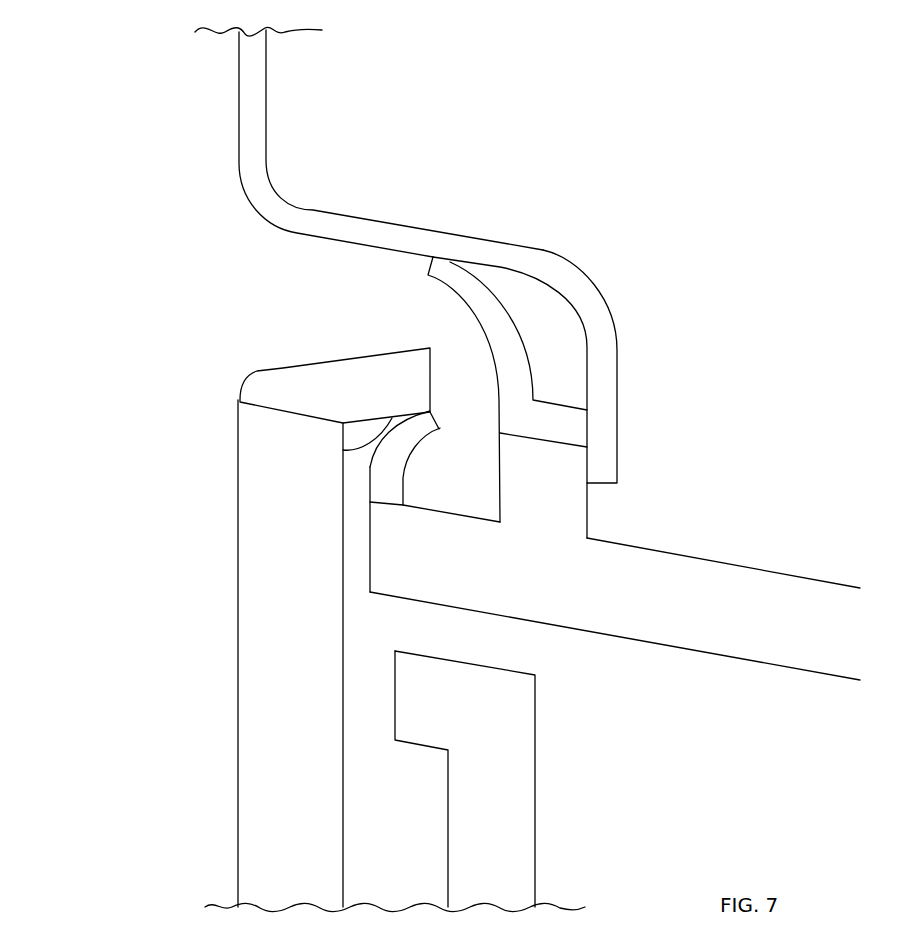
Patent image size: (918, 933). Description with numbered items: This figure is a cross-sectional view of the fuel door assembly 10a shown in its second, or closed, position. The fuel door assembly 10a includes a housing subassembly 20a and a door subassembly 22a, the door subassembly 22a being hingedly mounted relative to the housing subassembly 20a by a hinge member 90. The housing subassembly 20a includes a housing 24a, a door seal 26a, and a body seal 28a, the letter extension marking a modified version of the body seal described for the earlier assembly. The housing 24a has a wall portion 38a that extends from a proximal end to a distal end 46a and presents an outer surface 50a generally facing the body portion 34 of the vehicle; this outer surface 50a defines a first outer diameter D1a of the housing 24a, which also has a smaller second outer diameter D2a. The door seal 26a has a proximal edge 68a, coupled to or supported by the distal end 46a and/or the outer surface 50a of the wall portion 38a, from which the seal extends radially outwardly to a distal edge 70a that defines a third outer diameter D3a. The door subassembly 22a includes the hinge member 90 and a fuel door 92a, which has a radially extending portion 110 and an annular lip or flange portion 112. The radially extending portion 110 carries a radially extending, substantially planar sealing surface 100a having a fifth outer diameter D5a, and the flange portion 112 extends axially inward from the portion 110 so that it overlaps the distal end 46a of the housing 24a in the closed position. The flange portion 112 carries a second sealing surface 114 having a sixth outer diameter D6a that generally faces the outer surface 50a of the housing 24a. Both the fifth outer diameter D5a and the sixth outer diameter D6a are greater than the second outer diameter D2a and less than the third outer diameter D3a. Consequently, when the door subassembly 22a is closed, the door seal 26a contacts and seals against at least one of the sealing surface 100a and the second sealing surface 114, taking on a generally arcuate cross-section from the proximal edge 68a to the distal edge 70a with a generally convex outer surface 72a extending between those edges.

The fuel door assembly 10a is at (135, 165).
The body portion 34 is at (350, 223).
The roof side flange 28a is at (525, 369).
The convex outer surface 72a is at (390, 417).
The third outer diameter D3a is at (435, 420).
The distal edge 70a is at (439, 428).
The second outer diameter D2a is at (570, 445).
The flange portion 112 is at (353, 378).
The second sealing surface 114 is at (372, 422).
The fifth outer diameter D5a is at (343, 423).
The sixth outer diameter D6a is at (343, 450).
The door seal 26a is at (377, 469).
The proximal edge 68a is at (390, 500).
The distal end 46a is at (370, 560).
The first outer diameter D1a is at (685, 555).
The housing subassembly 20a is at (766, 560).
The outer surface 50a is at (800, 573).
The wall portion 38a is at (817, 607).
The housing 24a is at (762, 652).
The door subassembly 22a is at (237, 687).
The radially extending portion 110 is at (265, 742).
The fuel door 92a is at (237, 807).
The sealing surface 100a is at (345, 795).
The hinge member 90 is at (538, 830).